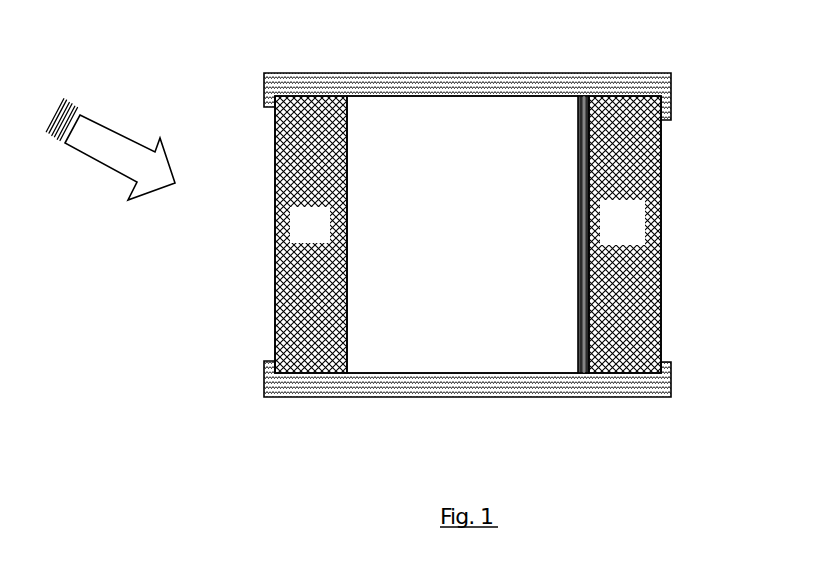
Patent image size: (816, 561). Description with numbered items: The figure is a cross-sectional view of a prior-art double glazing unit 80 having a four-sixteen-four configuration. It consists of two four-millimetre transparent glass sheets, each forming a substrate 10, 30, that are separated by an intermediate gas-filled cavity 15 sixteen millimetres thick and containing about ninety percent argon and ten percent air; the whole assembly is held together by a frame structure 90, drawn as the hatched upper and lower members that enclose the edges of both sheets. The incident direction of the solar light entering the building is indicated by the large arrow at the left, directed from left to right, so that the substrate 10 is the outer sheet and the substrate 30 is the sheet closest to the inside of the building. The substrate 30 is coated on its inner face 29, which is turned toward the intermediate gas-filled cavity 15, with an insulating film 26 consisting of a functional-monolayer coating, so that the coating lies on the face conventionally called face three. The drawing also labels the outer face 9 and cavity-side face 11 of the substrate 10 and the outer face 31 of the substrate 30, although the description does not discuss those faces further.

The double glazing unit 80 is at (168, 81).
The frame structure 90 is at (343, 94).
The insulating film 26 is at (580, 372).
The substrate 10 is at (321, 233).
The outer surface of first block 9 is at (275, 343).
The inner surface of first block 11 is at (347, 307).
The intermediate gas-filled cavity 15 is at (472, 234).
The inner face 29 is at (589, 331).
The substrate 30 is at (632, 233).
The outer surface of second block 31 is at (661, 299).